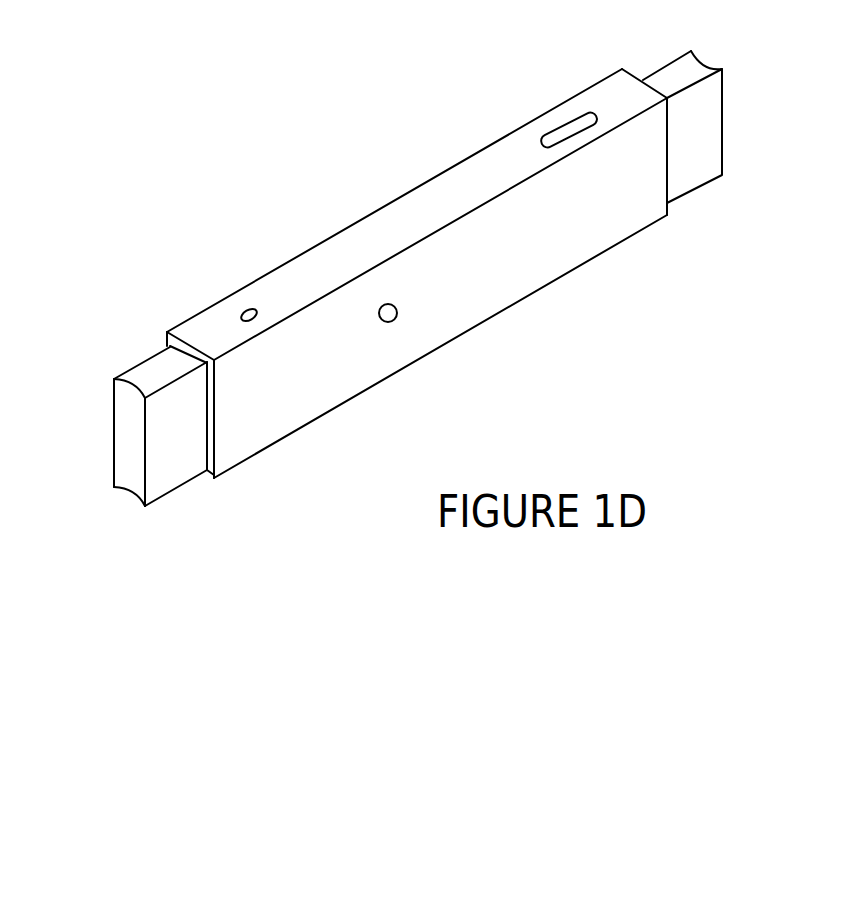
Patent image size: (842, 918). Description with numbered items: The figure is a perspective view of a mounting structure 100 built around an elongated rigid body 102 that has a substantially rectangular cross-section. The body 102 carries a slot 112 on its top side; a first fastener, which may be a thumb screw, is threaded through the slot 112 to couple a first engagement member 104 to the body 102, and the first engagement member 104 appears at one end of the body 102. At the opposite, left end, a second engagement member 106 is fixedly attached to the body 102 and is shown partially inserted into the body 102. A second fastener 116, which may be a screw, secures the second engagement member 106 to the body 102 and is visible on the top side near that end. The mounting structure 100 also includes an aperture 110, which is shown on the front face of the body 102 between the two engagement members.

The mounting structure 100 is at (243, 77).
The body 102 is at (347, 228).
The first engagement member 104 is at (703, 63).
The second engagement member 106 is at (150, 358).
The aperture 110 is at (395, 306).
The slot 112 is at (562, 133).
The second fastener 116 is at (247, 311).